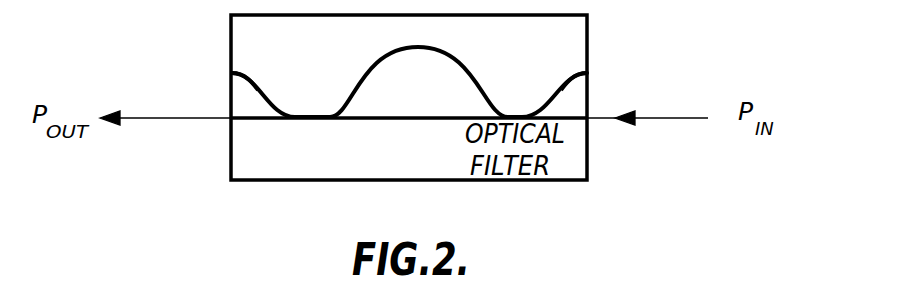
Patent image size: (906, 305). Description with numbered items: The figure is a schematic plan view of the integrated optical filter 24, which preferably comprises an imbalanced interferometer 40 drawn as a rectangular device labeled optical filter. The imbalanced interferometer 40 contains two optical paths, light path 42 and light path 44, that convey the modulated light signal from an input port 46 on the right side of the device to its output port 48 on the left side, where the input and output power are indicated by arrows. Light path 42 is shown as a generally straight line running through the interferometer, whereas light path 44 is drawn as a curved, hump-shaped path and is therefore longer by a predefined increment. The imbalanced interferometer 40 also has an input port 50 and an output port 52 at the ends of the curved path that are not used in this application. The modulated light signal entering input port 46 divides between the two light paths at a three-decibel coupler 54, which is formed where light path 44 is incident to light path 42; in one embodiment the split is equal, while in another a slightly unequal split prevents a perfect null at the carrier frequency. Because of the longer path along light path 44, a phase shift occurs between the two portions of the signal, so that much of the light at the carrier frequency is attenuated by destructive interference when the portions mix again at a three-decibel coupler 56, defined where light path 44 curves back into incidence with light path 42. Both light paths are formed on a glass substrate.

The integrated optical filter 24 is at (182, 198).
The imbalanced interferometer 40 is at (555, 50).
The light path 42 is at (410, 121).
The light path 44 is at (355, 75).
The input port 46 is at (588, 120).
The output port 48 is at (230, 120).
The input port 50 is at (587, 73).
The output port 52 is at (232, 74).
The 3 dB coupler 54 is at (513, 115).
The 3 dB coupler 56 is at (305, 115).